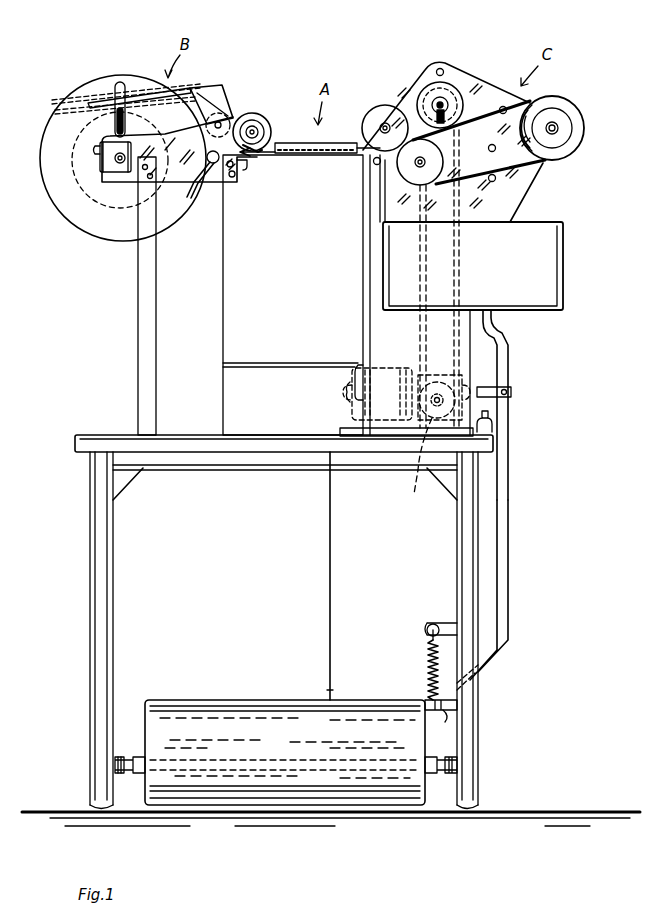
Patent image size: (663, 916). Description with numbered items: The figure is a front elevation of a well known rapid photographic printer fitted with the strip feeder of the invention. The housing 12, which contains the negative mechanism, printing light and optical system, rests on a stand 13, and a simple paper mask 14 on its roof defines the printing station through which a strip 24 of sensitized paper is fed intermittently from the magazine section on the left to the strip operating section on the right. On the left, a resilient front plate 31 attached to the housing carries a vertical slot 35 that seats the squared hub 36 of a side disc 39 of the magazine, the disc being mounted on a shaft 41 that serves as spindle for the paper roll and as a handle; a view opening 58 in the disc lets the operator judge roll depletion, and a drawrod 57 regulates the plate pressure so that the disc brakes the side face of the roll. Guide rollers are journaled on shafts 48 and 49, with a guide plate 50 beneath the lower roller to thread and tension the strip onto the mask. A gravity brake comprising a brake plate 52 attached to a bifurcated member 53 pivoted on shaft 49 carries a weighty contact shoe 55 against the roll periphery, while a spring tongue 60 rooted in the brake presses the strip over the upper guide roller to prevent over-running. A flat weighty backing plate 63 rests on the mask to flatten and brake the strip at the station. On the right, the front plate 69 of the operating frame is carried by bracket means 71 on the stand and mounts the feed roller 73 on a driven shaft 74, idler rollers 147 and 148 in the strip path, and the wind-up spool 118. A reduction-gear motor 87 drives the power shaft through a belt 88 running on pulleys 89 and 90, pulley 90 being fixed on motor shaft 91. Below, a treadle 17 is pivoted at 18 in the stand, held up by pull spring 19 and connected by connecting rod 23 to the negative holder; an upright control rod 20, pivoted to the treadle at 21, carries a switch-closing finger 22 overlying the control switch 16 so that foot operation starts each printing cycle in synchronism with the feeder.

The housing 12 is at (296, 295).
The stand 13 is at (90, 490).
The paper mask 14 is at (320, 155).
The control switch 16 is at (492, 417).
The treadle 17 is at (234, 702).
The pivotal mounting 18 is at (133, 754).
The pull spring 19 is at (427, 662).
The control rod 20 is at (509, 566).
The pivotal connection 21 is at (447, 716).
The switch-closing finger 22 is at (492, 387).
The connecting rod 23 is at (328, 566).
The strip of sensitized paper 24 is at (270, 150).
The front plate 31 is at (184, 182).
The vertical slot 35 is at (96, 148).
The squared hub 36 is at (104, 168).
The side disc 39 is at (82, 226).
The shaft 41 is at (100, 158).
The shaft 48 is at (263, 115).
The shaft 49 is at (255, 118).
The guide plate 50 is at (242, 164).
The brake plate 52 is at (188, 88).
The bifurcated member 53 is at (226, 90).
The contact shoe 55 is at (56, 122).
The drawrod 57 is at (205, 196).
The view opening 58 is at (122, 82).
The spring tongue 60 is at (222, 112).
The backing plate 63 is at (347, 141).
The front plate 69 is at (536, 183).
The bracket means 71 is at (496, 338).
The feed roller 73 is at (490, 92).
The driven shaft 74 is at (458, 80).
The reduction-gear motor 87 is at (392, 364).
The belt 88 is at (464, 254).
The pulley 89 is at (443, 100).
The pulley 90 is at (436, 381).
The motor shaft 91 is at (416, 472).
The spool 118 is at (572, 118).
The idler roller 147 is at (384, 105).
The idler roller 148 is at (378, 170).